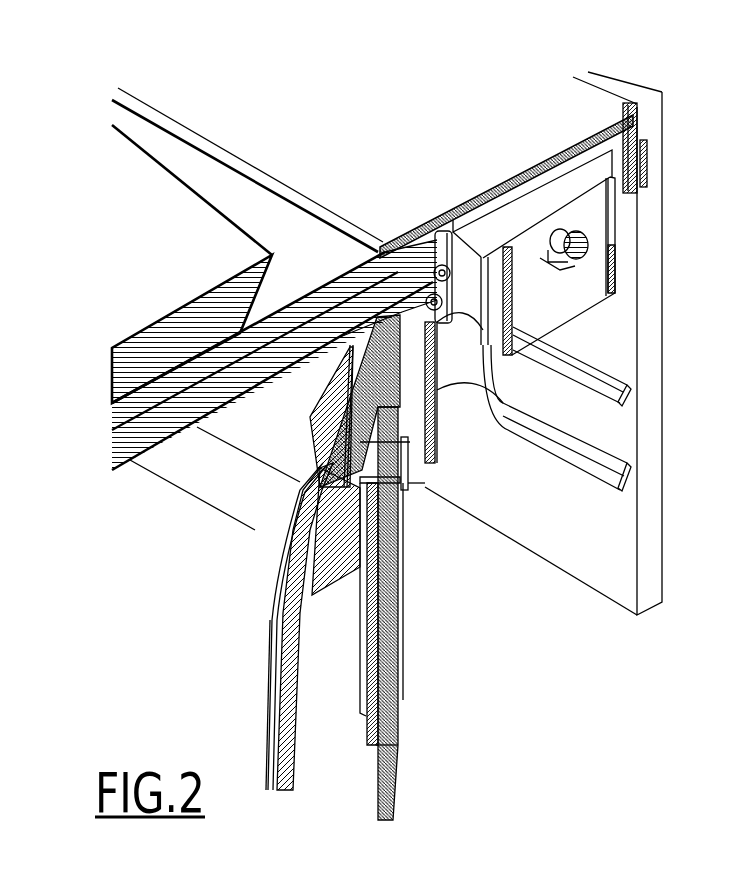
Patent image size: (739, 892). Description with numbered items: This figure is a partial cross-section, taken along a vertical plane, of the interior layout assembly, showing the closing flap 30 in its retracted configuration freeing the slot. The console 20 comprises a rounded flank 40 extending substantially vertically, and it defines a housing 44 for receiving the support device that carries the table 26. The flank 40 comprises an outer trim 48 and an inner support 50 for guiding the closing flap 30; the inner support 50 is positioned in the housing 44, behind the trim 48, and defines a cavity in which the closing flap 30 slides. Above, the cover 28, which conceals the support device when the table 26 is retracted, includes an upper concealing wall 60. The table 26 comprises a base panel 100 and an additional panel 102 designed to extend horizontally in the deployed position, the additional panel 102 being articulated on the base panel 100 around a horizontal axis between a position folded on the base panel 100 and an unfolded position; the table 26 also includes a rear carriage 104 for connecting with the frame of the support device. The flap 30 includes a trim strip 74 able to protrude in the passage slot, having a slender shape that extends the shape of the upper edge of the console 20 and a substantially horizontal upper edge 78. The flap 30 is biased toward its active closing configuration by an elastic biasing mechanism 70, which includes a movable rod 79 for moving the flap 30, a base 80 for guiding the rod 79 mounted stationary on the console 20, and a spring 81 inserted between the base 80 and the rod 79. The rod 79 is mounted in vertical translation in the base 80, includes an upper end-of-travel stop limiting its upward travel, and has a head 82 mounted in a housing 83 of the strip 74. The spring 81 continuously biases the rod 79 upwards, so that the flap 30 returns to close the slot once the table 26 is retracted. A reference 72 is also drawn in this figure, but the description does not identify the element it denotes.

The console 20 is at (112, 578).
The table 26 is at (147, 277).
The cover 28 is at (330, 128).
The retractable flap 30 is at (515, 329).
The rounded flank 40 is at (263, 598).
The housing 44 is at (429, 542).
The outer trim 48 is at (243, 505).
The inner support 50 is at (333, 583).
The upper concealing wall 60 is at (460, 200).
The elastic biasing mechanism 70 is at (352, 682).
The holder 72 is at (410, 470).
The trim strip 74 is at (437, 430).
The upper edge 78 is at (383, 243).
The movable rod 79 is at (398, 728).
The base 80 is at (363, 697).
The spring 81 is at (404, 582).
The head 82 is at (330, 414).
The housing 83 is at (352, 392).
The base panel 100 is at (118, 445).
The additional panel 102 is at (116, 366).
The rear carriage 104 is at (615, 226).